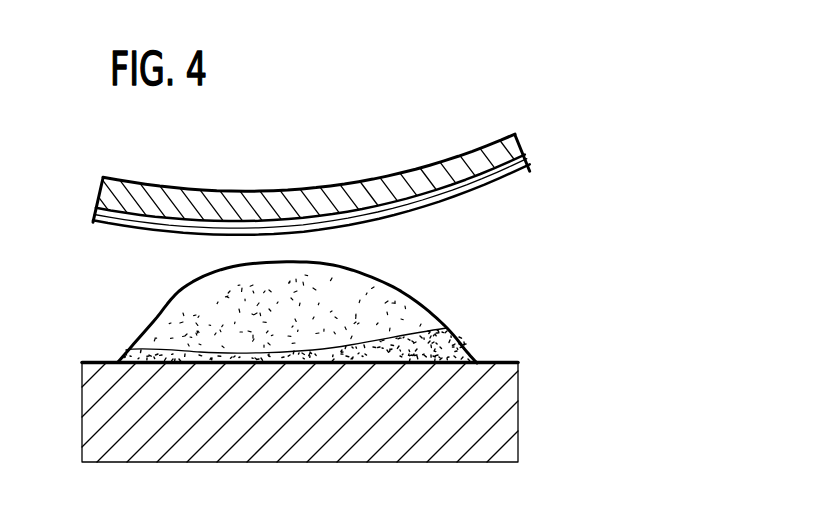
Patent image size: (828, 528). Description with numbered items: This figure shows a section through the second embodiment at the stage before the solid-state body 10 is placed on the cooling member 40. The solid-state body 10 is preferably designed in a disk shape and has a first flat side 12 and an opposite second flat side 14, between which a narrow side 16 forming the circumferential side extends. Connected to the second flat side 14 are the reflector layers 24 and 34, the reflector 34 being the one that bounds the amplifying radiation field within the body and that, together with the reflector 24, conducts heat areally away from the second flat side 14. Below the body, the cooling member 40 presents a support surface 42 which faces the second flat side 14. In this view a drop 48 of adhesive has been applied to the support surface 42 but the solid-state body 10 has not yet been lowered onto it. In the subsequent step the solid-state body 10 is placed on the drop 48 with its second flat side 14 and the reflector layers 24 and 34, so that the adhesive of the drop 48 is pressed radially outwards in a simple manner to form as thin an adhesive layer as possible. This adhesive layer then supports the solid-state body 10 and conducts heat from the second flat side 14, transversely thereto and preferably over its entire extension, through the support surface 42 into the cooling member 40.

The solid-state body 10 is at (341, 161).
The first flat side 12 is at (505, 134).
The second flat side 14 is at (520, 178).
The narrow side 16 is at (528, 150).
The reflector 24 is at (470, 197).
The reflector 34 is at (433, 205).
The cooling member 40 is at (353, 393).
The support surface 42 is at (494, 363).
The drop of adhesive 48 is at (200, 303).